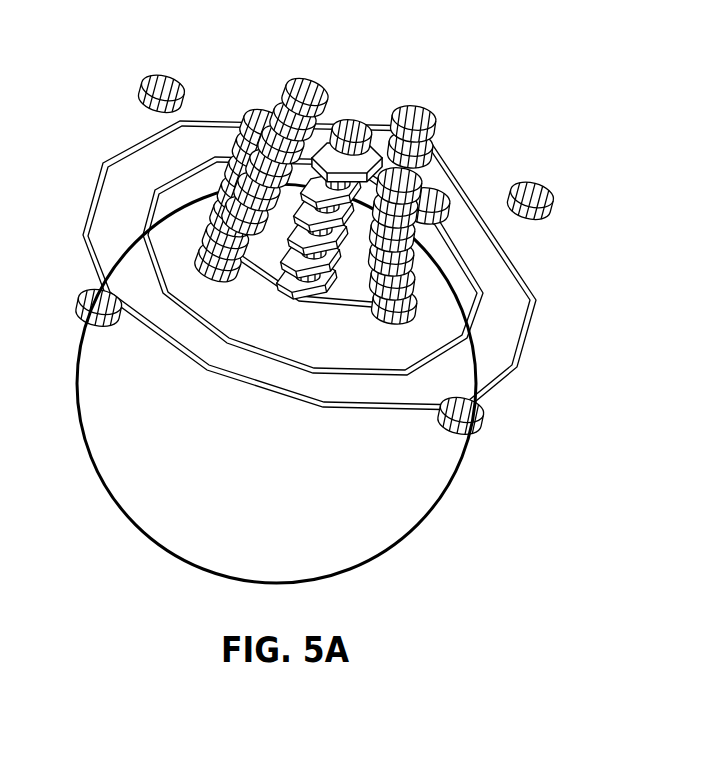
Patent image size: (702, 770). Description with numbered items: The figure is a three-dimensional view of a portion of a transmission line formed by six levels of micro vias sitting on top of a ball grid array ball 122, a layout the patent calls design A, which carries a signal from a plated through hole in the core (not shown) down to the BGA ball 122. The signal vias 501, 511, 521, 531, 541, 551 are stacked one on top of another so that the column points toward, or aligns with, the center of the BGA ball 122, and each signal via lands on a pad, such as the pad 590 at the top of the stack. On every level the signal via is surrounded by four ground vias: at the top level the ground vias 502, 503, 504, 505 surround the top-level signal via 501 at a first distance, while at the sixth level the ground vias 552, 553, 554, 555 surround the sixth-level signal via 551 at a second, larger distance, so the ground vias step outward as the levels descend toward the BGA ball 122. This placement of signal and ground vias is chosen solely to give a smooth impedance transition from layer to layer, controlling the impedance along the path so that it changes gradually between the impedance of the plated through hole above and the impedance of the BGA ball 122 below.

The ball grid array (BGA) ball 122 is at (426, 517).
The signal via 501 is at (372, 130).
The ground via 502 is at (429, 113).
The ground via 503 is at (442, 190).
The ground via 504 is at (268, 112).
The ground via 505 is at (309, 80).
The pad 590 is at (353, 118).
The signal via 511 is at (352, 198).
The signal via 521 is at (336, 222).
The signal via 531 is at (322, 245).
The signal via 541 is at (312, 266).
The signal via 551 is at (300, 286).
The ground via 552 is at (552, 212).
The ground via 553 is at (485, 422).
The ground via 554 is at (80, 305).
The ground via 555 is at (160, 76).